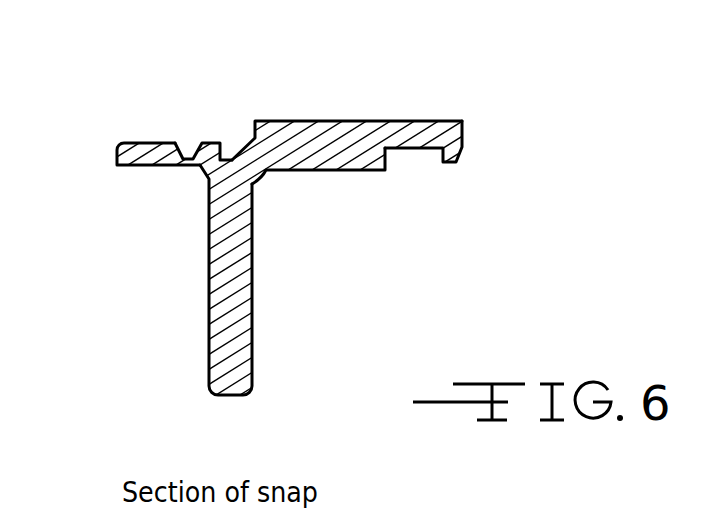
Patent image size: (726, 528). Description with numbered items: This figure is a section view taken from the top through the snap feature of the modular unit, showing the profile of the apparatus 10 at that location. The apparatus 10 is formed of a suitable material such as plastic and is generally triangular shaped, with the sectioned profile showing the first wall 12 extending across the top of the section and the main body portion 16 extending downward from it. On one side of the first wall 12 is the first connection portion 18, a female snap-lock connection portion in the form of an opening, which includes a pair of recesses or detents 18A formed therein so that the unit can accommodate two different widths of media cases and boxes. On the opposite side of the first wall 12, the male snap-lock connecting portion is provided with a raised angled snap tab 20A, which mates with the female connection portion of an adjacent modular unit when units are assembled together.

The apparatus 10 is at (305, 264).
The first wall 12 is at (325, 135).
The main body portion 16 is at (217, 347).
The first connection portion 18 is at (145, 170).
The recesses 18A is at (232, 160).
The angled snap tab 20A is at (455, 158).